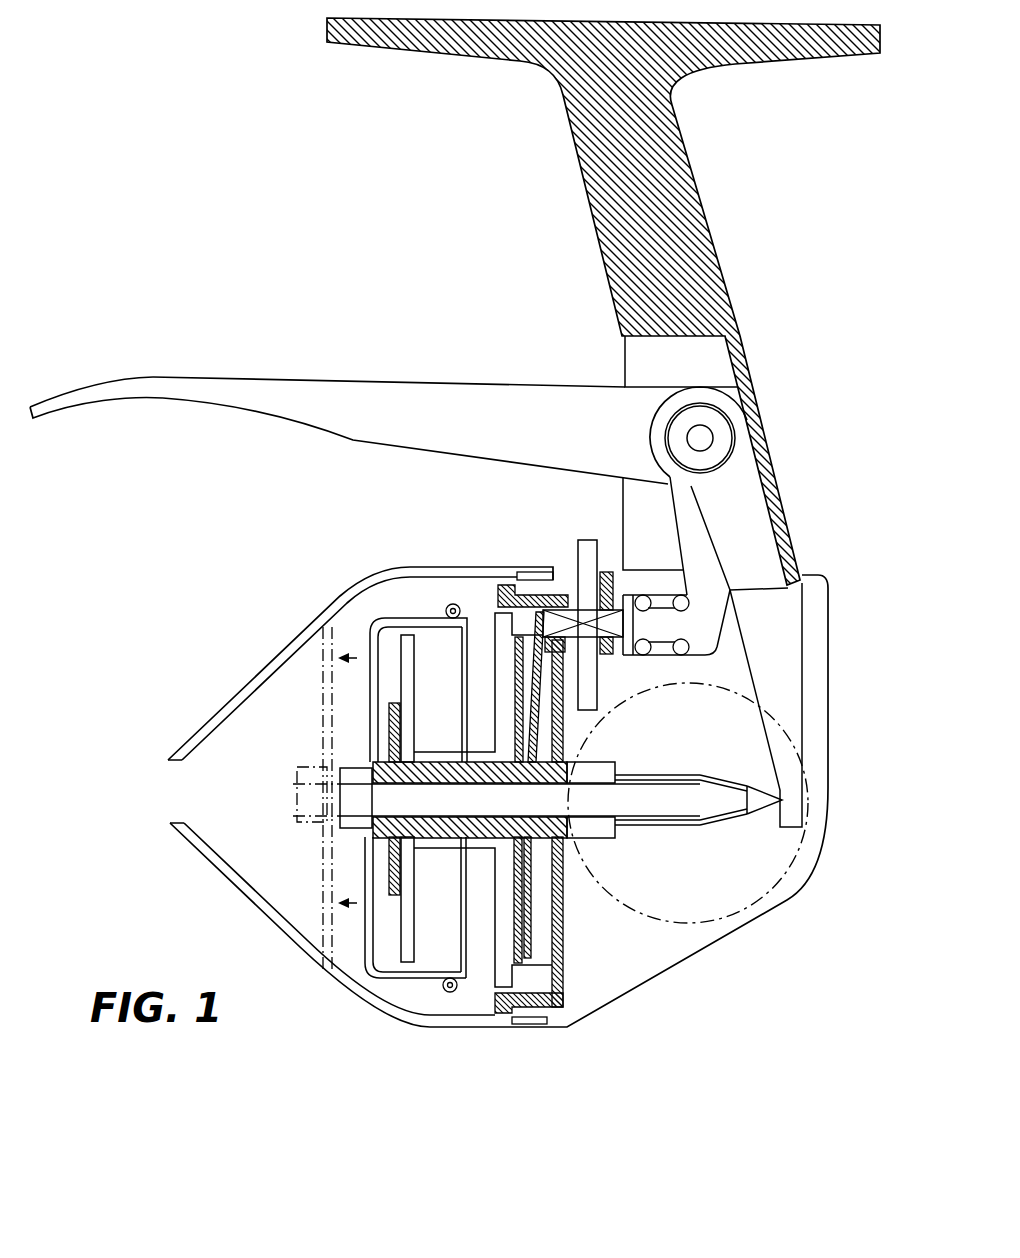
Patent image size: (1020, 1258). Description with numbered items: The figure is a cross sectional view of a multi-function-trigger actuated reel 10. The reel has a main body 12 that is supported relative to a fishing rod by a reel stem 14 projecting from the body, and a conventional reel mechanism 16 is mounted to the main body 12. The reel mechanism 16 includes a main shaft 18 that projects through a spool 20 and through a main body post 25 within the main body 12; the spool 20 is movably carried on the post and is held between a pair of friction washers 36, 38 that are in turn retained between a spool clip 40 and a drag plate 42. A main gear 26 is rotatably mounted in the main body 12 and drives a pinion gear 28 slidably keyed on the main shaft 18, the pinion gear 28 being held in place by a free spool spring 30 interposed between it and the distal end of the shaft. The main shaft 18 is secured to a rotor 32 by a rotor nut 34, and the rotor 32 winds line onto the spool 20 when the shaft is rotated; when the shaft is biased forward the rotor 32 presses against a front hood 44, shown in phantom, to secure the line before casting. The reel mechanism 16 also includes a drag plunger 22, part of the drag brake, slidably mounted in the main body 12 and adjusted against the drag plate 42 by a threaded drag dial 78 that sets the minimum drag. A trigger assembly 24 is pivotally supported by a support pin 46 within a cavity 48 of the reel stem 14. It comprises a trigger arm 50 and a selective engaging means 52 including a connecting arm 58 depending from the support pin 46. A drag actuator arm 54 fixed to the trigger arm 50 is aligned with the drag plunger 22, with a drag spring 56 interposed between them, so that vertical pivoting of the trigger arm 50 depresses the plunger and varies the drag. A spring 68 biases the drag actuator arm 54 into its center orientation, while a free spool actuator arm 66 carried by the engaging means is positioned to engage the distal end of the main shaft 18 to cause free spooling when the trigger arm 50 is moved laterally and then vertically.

The multi-function-trigger actuated reel 10 is at (800, 246).
The main body 12 is at (483, 828).
The reel stem 14 is at (665, 185).
The reel mechanism 16 is at (370, 756).
The main shaft 18 is at (561, 812).
The spool 20 is at (410, 725).
The drag plunger 22 is at (587, 636).
The trigger assembly 24 is at (349, 384).
The main body post 25 is at (450, 832).
The main gear 26 is at (757, 885).
The pinion gear 28 is at (593, 833).
The free spool spring 30 is at (705, 775).
The rotor 32 is at (320, 933).
The rotor nut 34 is at (335, 796).
The friction washer 36 is at (398, 703).
The friction washer 38 is at (517, 652).
The spool clip 40 is at (390, 745).
The drag plate 42 is at (530, 733).
The front hood 44 is at (183, 823).
The support pin 46 is at (700, 438).
The cavity 48 is at (625, 353).
The trigger arm 50 is at (195, 393).
The selective engaging means 52 is at (736, 557).
The drag actuator arm 54 is at (688, 542).
The drag spring 56 is at (660, 597).
The connecting arm 58 is at (757, 556).
The free spool actuator arm 66 is at (790, 690).
The spring 68 is at (650, 436).
The drag dial 78 is at (589, 539).